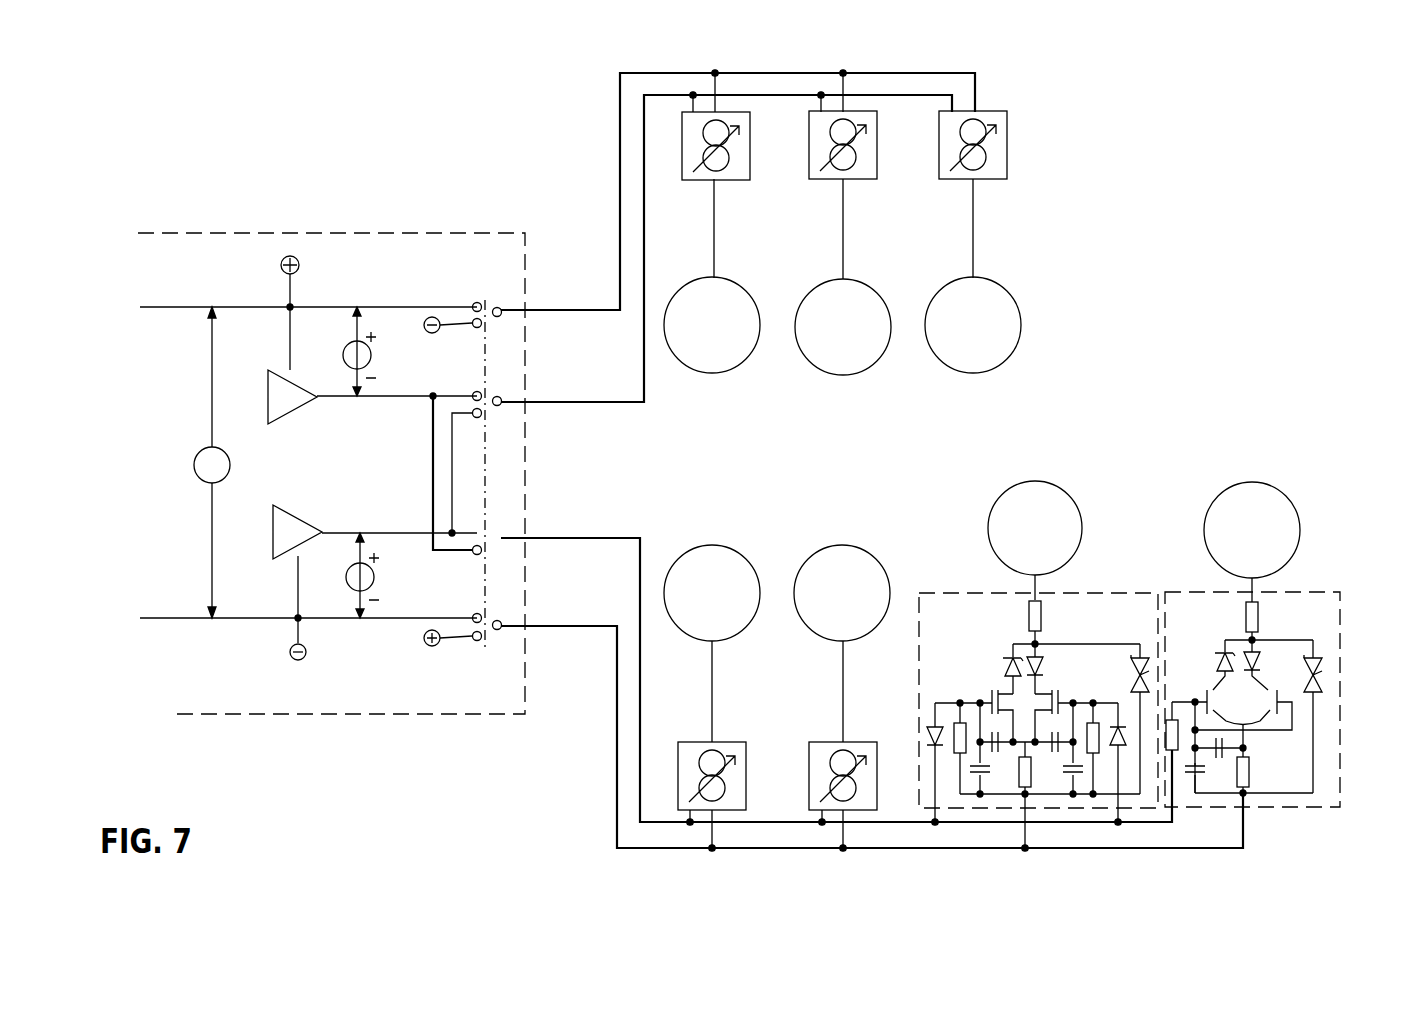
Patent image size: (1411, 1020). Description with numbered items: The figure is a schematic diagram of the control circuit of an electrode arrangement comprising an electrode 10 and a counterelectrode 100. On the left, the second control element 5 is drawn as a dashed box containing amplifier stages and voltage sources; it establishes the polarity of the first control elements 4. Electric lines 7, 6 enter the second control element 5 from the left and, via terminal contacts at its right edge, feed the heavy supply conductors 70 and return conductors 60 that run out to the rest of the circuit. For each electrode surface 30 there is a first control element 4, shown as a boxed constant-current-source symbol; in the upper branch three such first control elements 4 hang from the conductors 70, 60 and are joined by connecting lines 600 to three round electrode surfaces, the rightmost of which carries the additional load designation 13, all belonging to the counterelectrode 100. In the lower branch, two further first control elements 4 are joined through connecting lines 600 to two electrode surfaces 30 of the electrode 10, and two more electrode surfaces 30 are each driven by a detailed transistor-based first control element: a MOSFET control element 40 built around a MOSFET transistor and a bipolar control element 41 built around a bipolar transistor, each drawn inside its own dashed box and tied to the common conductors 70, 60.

The second control element 5 is at (296, 232).
The electric line 7 is at (142, 307).
The electric line 6 is at (142, 618).
The power wire 70 is at (572, 308).
The return wire 60 is at (562, 402).
The first control element 4 is at (1003, 136).
The connecting line 600 is at (973, 232).
The load 13 is at (995, 300).
The electrode surface 30 is at (847, 558).
The MOSFET control element 40 is at (943, 593).
The bipolar control element 41 is at (1320, 592).
The counterelectrode 100 is at (1147, 143).
The electrode 10 is at (1255, 380).